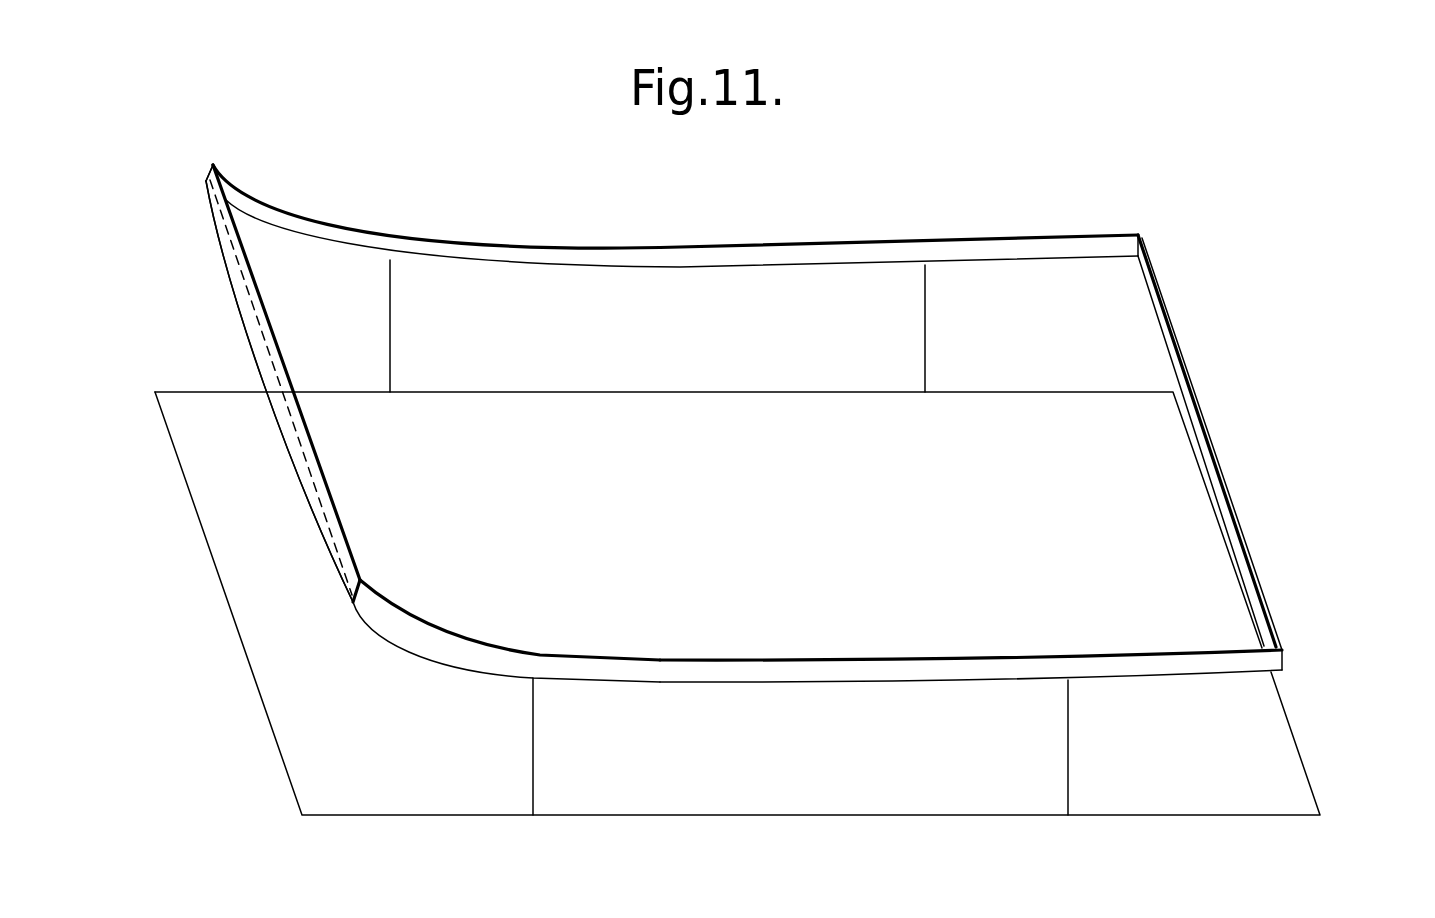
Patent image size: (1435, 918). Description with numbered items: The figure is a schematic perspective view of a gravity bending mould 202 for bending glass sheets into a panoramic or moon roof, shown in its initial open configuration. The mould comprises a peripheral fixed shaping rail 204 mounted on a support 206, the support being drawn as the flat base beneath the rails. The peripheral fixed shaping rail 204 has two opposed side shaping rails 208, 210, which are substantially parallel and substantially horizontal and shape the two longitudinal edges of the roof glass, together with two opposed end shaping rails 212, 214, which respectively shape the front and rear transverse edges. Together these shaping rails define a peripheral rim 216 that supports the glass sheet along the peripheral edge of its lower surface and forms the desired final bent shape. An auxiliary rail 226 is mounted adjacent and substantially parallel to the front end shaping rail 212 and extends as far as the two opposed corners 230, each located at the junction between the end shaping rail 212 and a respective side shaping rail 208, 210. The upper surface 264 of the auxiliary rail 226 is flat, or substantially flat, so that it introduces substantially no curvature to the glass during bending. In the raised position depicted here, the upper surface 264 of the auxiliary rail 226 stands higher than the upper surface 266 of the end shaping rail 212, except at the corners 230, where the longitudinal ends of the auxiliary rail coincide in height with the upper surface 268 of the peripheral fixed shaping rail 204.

The gravity bending mould 202 is at (1078, 203).
The peripheral fixed shaping rail 204 is at (1160, 670).
The support 206 is at (1308, 770).
The side shaping rail 208 is at (716, 253).
The side shaping rail 210 is at (818, 672).
The end shaping rail 212 is at (342, 553).
The end shaping rail 214 is at (1150, 285).
The peripheral rim 216 is at (668, 672).
The auxiliary rail 226 is at (343, 530).
The corners 230 is at (212, 165).
The upper surface of the auxiliary rail 264 is at (325, 473).
The upper surface of the end shaping rail 266 is at (238, 268).
The upper surface of the peripheral fixed shaping rail 268 is at (363, 582).